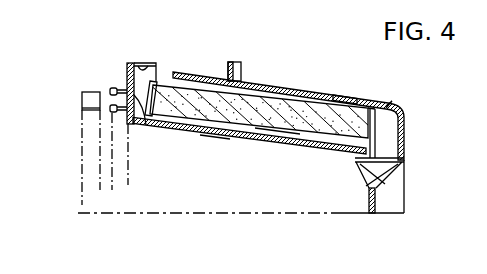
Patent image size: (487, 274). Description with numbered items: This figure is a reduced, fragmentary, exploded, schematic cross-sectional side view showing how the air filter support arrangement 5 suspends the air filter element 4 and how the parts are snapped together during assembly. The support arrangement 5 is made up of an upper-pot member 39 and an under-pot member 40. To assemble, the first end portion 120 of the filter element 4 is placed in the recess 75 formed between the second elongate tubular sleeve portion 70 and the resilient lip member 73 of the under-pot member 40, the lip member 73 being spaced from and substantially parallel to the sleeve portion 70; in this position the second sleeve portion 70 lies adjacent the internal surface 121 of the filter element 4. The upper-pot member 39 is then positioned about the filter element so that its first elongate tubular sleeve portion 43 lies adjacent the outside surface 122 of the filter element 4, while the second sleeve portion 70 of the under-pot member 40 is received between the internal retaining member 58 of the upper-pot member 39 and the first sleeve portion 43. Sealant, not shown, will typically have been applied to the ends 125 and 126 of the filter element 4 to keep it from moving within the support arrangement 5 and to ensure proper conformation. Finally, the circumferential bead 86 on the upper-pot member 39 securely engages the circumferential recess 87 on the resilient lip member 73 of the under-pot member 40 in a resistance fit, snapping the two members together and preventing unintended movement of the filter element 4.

The air filter element 4 is at (356, 108).
The air filter support arrangement 5 is at (391, 100).
The upper-pot member 39 is at (403, 107).
The under-pot member 40 is at (320, 147).
The first elongate tubular sleeve portion 43 is at (283, 91).
The internal retaining member 58 is at (383, 177).
The second elongate tubular sleeve portion 70 is at (207, 135).
The resilient lip member 73 is at (150, 64).
The recess 75 is at (146, 126).
The circumferential bead 86 is at (182, 72).
The circumferential recess 87 is at (138, 65).
The first end portion 120 is at (158, 85).
The internal surface 121 is at (266, 129).
The outside surface 122 is at (336, 98).
The end 125 is at (128, 91).
The end 126 is at (373, 134).